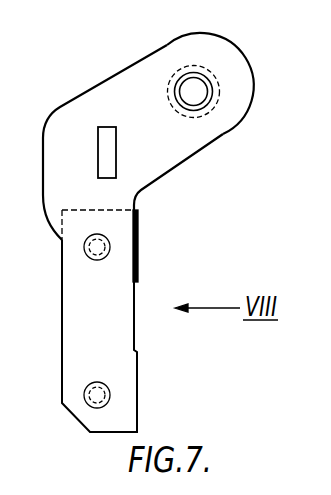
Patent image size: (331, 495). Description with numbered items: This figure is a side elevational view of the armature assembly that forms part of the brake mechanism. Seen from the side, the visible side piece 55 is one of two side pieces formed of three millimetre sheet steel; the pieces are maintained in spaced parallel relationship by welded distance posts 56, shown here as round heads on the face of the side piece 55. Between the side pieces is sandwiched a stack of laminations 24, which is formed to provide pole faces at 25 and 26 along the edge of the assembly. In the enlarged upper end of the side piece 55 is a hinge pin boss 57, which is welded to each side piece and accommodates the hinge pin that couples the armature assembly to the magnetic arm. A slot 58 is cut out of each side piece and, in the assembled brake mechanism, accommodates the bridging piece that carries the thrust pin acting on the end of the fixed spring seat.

The stack of laminations 24 is at (62, 323).
The pole face 25 is at (137, 392).
The pole face 26 is at (138, 237).
The side piece 55 is at (198, 138).
The distance posts 56 is at (88, 249).
The hinge pin boss 57 is at (212, 92).
The slot 58 is at (100, 160).